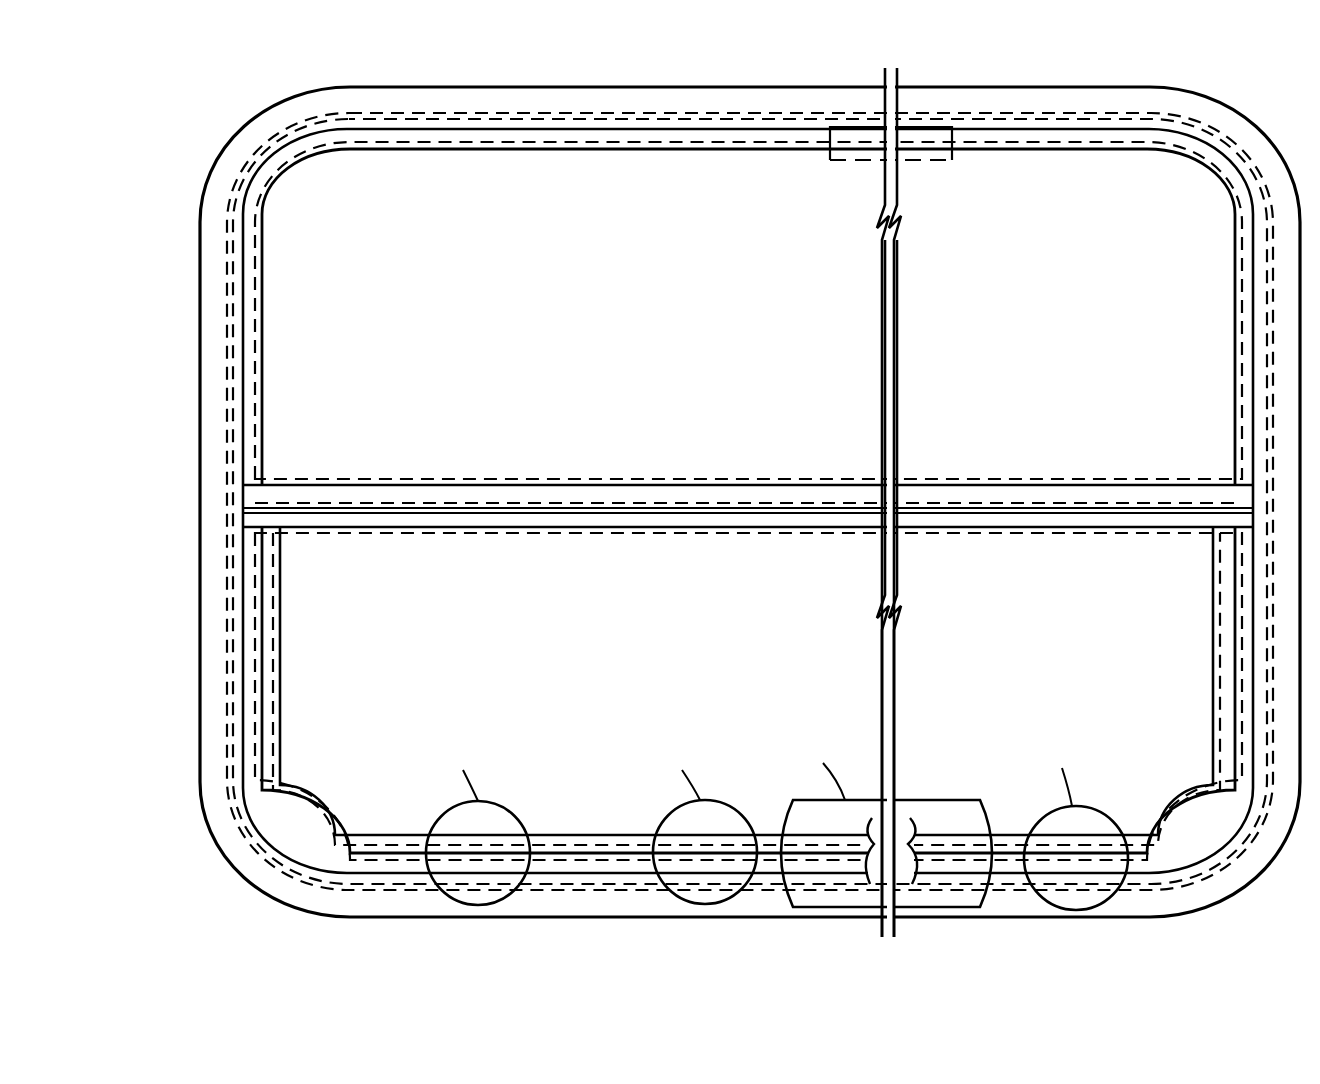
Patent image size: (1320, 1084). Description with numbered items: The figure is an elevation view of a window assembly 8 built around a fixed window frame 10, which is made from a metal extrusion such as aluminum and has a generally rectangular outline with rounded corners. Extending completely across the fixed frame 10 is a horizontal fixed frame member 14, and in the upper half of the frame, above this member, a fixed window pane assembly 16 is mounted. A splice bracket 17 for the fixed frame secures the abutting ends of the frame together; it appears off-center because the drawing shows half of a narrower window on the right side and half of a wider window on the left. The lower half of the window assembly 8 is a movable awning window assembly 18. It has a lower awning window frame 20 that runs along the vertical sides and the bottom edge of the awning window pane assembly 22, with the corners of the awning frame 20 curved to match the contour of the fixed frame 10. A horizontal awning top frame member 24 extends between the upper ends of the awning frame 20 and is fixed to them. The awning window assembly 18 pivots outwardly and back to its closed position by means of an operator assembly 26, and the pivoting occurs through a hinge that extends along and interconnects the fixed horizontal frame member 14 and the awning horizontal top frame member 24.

The window assembly 8 is at (675, 503).
The fixed window frame 10 is at (258, 332).
The horizontal fixed frame member 14 is at (340, 492).
The fixed window pane assembly 16 is at (553, 314).
The splice bracket 17 is at (933, 160).
The awning window assembly 18 is at (312, 778).
The lower awning window frame 20 is at (308, 843).
The awning window pane assembly 22 is at (581, 581).
The horizontal awning top frame member 24 is at (975, 518).
The operator assembly 26 is at (908, 796).